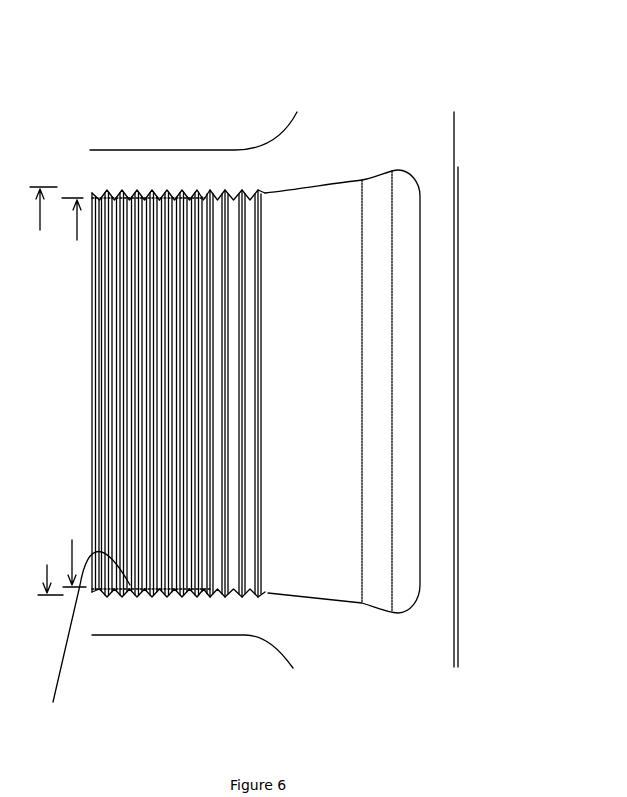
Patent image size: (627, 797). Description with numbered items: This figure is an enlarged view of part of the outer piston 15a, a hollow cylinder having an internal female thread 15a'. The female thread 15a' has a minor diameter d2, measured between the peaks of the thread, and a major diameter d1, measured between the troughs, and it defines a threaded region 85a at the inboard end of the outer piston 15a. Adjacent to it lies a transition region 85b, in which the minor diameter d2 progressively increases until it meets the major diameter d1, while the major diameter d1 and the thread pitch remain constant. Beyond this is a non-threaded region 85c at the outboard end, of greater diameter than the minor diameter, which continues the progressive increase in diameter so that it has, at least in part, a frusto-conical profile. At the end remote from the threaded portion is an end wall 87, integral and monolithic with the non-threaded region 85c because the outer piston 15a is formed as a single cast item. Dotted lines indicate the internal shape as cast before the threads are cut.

The outer piston 15a is at (193, 351).
The female thread 15a' is at (88, 641).
The threaded region 85a is at (92, 600).
The transition region 85b is at (160, 600).
The non-threaded region 85c is at (420, 622).
The end wall 87 is at (442, 472).
The major diameter d1 is at (46, 391).
The minor diameter d2 is at (136, 393).